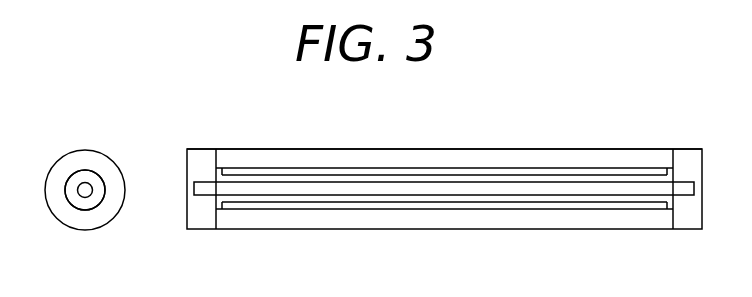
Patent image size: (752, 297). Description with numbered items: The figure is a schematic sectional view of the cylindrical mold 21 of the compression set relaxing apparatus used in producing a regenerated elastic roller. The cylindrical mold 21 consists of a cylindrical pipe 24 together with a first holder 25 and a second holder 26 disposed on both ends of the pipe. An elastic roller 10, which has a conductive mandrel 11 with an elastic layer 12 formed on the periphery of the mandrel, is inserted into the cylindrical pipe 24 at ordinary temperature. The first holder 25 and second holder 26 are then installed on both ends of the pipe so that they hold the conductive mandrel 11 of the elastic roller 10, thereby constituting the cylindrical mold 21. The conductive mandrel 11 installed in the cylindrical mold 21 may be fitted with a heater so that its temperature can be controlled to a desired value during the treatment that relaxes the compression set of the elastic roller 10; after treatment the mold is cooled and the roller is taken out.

The elastic roller 10 is at (673, 200).
The conductive mandrel 11 is at (85, 192).
The elastic layer 12 is at (77, 203).
The cylindrical mold 21 is at (535, 148).
The cylindrical pipe 24 is at (98, 160).
The first holder 25 is at (200, 158).
The second holder 26 is at (688, 158).